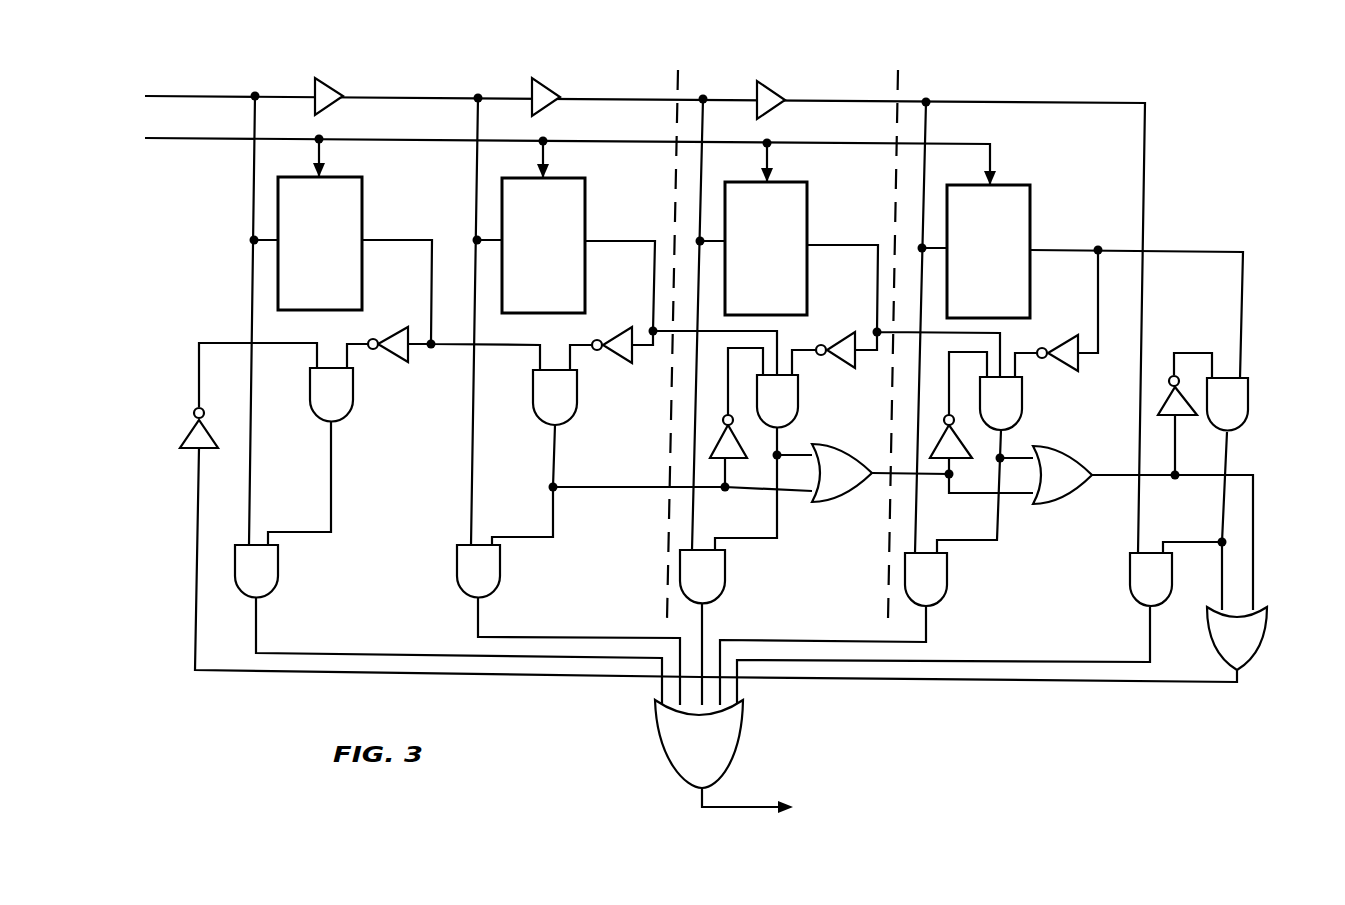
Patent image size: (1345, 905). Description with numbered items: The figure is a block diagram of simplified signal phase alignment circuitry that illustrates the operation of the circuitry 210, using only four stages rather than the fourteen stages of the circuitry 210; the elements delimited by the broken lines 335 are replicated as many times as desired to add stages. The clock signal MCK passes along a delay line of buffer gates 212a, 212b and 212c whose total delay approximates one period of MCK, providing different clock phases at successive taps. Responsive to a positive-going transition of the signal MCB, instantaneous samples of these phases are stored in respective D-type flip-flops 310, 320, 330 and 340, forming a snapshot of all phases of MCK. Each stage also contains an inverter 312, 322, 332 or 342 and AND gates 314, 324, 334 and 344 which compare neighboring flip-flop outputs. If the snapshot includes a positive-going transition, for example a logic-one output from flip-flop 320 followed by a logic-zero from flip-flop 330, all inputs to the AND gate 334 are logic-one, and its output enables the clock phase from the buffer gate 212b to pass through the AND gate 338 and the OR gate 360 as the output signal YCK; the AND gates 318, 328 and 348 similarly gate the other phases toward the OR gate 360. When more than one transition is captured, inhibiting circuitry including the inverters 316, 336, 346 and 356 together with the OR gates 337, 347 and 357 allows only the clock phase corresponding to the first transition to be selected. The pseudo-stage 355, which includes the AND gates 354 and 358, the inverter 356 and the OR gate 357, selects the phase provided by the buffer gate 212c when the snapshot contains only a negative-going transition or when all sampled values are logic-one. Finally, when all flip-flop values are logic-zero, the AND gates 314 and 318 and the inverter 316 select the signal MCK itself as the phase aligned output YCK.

The signal phase alignment circuitry 210 is at (717, 442).
The buffer gate 212a is at (331, 84).
The buffer gate 212b is at (546, 84).
The buffer gate 212c is at (772, 88).
The D-type flip-flop 310 is at (363, 213).
The inverter 312 is at (389, 329).
The AND gate 314 is at (353, 390).
The inverter 316 is at (185, 430).
The AND gate 318 is at (278, 558).
The D-type flip-flop 320 is at (585, 215).
The inverter 322 is at (617, 330).
The AND gate 324 is at (577, 392).
The AND gate 328 is at (500, 573).
The D-type flip-flop 330 is at (807, 215).
The inverter 332 is at (836, 335).
The AND gate 334 is at (798, 392).
The broken lines 335 is at (745, 82).
The inverter 336 is at (735, 458).
The OR gate 337 is at (838, 498).
The AND gate 338 is at (725, 578).
The D-type flip-flop 340 is at (1030, 215).
The inverter 342 is at (1056, 341).
The AND gate 344 is at (1022, 405).
The inverter 346 is at (960, 458).
The OR gate 347 is at (1076, 498).
The AND gate 348 is at (947, 578).
The AND gate 354 is at (1248, 395).
The pseudo-stage 355 is at (1215, 466).
The inverter 356 is at (1166, 387).
The OR gate 357 is at (1208, 640).
The AND gate 358 is at (1130, 595).
The OR gate 360 is at (741, 750).